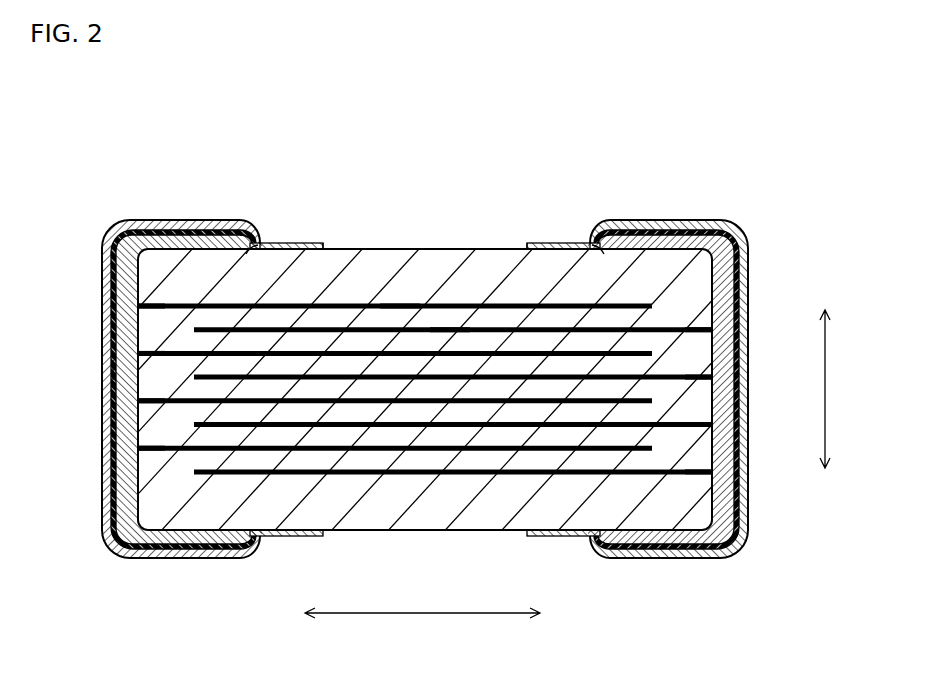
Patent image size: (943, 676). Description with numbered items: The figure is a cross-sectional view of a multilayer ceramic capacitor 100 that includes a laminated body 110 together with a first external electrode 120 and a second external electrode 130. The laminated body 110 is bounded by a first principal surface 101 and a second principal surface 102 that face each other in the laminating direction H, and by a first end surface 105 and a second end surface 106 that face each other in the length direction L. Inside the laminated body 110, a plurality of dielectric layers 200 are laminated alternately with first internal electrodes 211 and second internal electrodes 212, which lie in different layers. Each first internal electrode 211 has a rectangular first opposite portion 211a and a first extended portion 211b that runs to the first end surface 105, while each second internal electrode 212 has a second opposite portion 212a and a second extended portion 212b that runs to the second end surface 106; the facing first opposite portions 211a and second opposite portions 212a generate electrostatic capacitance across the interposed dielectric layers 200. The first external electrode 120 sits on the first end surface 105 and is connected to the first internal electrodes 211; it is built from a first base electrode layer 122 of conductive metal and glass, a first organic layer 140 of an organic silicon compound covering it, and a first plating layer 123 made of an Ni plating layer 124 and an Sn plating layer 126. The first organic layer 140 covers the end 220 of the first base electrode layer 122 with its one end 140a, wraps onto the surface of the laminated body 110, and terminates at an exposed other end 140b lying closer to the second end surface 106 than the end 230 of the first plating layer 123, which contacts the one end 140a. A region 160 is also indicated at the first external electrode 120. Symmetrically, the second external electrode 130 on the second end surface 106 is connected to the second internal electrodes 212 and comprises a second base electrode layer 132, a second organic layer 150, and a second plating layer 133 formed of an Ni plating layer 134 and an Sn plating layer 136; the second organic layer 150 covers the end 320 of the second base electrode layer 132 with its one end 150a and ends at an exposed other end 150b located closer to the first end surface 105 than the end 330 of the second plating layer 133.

The multilayer ceramic capacitor 100 is at (154, 163).
The first principal surface 101 is at (378, 248).
The second principal surface 102 is at (488, 531).
The first end surface 105 is at (137, 478).
The second end surface 106 is at (712, 412).
The laminated body 110 is at (408, 534).
The first external electrode 120 is at (109, 218).
The first base electrode layer 122 is at (128, 406).
The first plating layer 123 is at (265, 612).
The Ni plating layer 124 is at (168, 551).
The Sn plating layer 126 is at (222, 546).
The second external electrode 130 is at (720, 218).
The second base electrode layer 132 is at (727, 374).
The second plating layer 133 is at (737, 612).
The Ni plating layer 134 is at (640, 551).
The Sn plating layer 136 is at (705, 546).
The first organic layer 140 is at (292, 241).
The one end of the first organic layer 140a is at (257, 251).
The other end of the first organic layer 140b is at (328, 241).
The second organic layer 150 is at (553, 242).
The one end of the second organic layer 150a is at (600, 252).
The other end of the second organic layer 150b is at (527, 242).
The gap 160 is at (113, 369).
The dielectric layers 200 is at (363, 493).
The first internal electrodes 211 is at (240, 450).
The first opposite portion 211a is at (400, 304).
The first extended portion 211b is at (152, 349).
The second internal electrodes 212 is at (552, 474).
The second opposite portion 212a is at (450, 327).
The second extended portion 212b is at (696, 375).
The end of the first base electrode layer 220 is at (236, 242).
The end of the first plating layer 230 is at (263, 241).
The end of the second base electrode layer 320 is at (608, 243).
The end of the second plating layer 330 is at (592, 242).
The length direction L is at (422, 627).
The laminating direction H is at (834, 389).